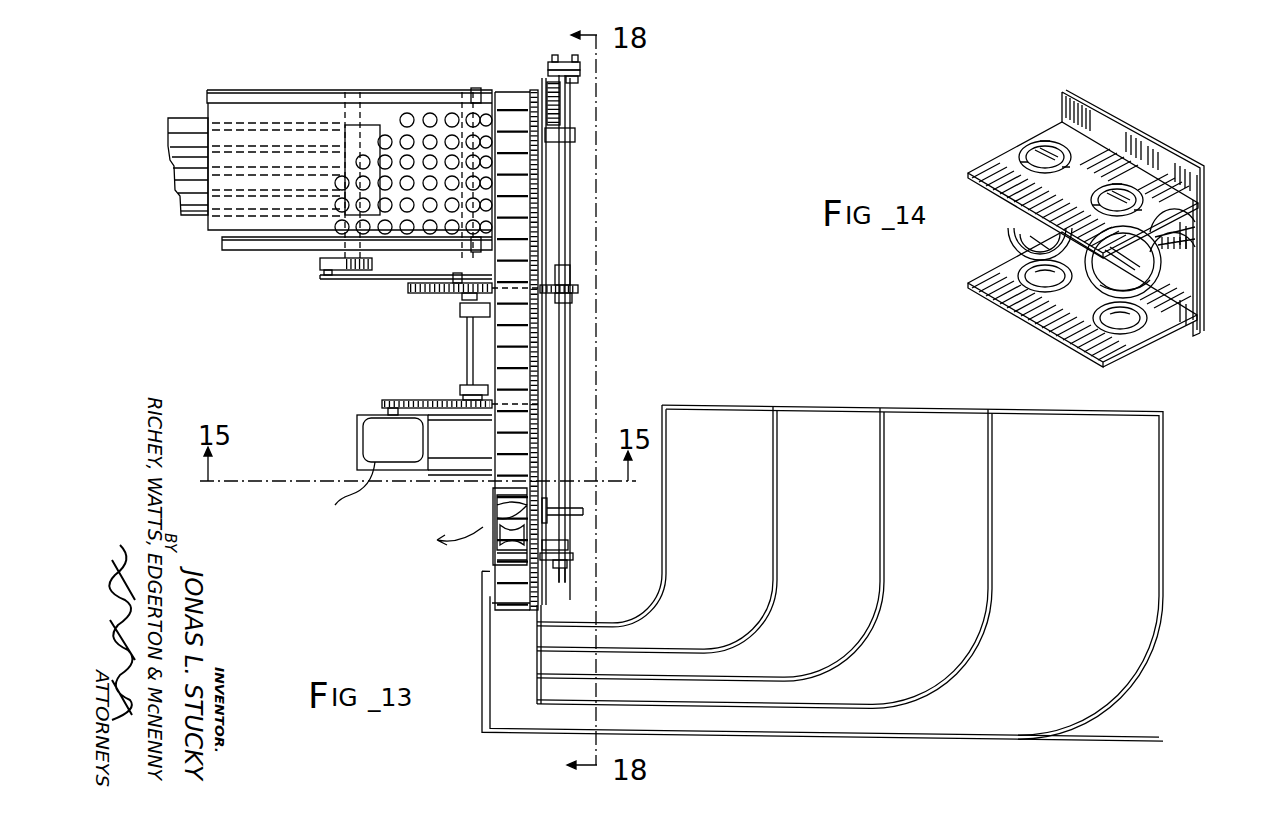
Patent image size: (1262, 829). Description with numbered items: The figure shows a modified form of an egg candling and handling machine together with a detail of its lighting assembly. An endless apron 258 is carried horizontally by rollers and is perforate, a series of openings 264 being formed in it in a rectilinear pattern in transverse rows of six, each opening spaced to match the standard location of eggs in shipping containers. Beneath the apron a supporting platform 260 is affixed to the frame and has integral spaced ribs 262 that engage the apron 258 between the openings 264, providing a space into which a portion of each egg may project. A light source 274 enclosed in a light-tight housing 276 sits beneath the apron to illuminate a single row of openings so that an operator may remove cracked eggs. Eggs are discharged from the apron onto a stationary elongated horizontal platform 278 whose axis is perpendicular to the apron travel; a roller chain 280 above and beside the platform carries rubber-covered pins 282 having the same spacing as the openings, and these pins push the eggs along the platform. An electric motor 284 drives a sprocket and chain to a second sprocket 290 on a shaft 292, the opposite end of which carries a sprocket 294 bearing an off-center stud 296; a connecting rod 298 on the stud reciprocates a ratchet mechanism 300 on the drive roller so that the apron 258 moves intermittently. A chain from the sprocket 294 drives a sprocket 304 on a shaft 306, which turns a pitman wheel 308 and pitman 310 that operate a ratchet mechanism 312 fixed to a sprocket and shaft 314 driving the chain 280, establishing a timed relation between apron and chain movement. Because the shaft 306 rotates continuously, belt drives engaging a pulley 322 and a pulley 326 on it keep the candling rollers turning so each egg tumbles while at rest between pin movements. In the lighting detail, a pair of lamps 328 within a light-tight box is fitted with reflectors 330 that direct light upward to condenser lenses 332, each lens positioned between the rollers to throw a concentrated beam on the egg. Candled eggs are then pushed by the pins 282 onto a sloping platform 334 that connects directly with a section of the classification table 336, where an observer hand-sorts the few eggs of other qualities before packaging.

In FIG. 13, the endless apron 258 is at (272, 228).
In FIG. 13, the supporting platform 260 is at (183, 180).
In FIG. 13, the spaced ribs 262 is at (200, 213).
In FIG. 13, the openings 264 is at (430, 118).
In FIG. 13, the light source 274 is at (400, 118).
In FIG. 13, the light-tight housing 276 is at (395, 120).
In FIG. 13, the stationary elongated horizontal platform 278 is at (510, 120).
In FIG. 13, the roller chain 280 is at (533, 90).
In FIG. 13, the pins 282 is at (515, 92).
In FIG. 13, the electric motor 284 is at (370, 445).
In FIG. 13, the second sprocket 290 is at (448, 400).
In FIG. 13, the shaft 292 is at (465, 355).
In FIG. 13, the sprocket 294 is at (455, 294).
In FIG. 13, the off-center stud 296 is at (458, 284).
In FIG. 13, the connecting rod 298 is at (370, 285).
In FIG. 13, the ratchet mechanism 300 is at (340, 275).
In FIG. 13, the sprocket 304 is at (572, 298).
In FIG. 13, the shaft 306 is at (568, 340).
In FIG. 13, the pitman wheel 308 is at (578, 78).
In FIG. 13, the pitman 310 is at (568, 60).
In FIG. 13, the ratchet mechanism 312 is at (560, 92).
In FIG. 13, the sprocket and shaft 314 is at (548, 112).
In FIG. 13, the pulley 322 is at (576, 500).
In FIG. 13, the pulley 326 is at (572, 565).
In FIG. 14, the lamps 328 is at (1145, 278).
In FIG. 14, the reflectors 330 is at (1092, 322).
In FIG. 14, the condenser lenses 332 is at (1135, 200).
In FIG. 13, the sloping platform 334 is at (495, 648).
In FIG. 13, the classification table 336 is at (853, 428).